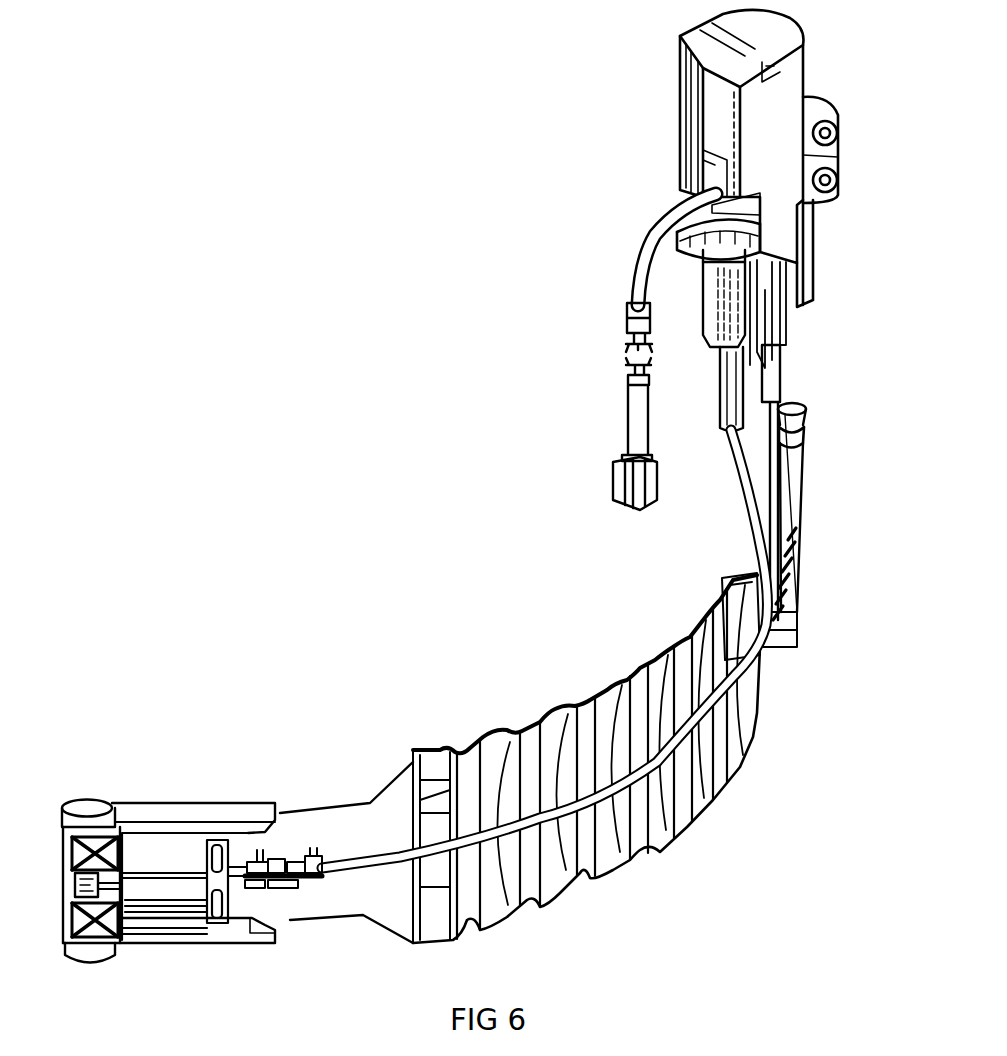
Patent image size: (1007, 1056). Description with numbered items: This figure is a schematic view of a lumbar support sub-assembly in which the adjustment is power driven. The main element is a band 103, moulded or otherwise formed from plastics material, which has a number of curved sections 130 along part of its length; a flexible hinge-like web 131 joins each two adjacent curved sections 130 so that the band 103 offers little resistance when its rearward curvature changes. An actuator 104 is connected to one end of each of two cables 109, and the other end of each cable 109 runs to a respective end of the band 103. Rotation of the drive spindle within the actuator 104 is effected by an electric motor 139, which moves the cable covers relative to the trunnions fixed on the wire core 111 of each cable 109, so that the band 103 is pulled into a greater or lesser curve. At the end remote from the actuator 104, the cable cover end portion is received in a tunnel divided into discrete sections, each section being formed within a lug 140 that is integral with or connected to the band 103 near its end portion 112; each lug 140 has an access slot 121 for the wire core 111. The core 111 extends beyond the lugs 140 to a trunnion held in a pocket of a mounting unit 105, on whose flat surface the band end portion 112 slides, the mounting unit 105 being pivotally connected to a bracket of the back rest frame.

The band 103 is at (550, 694).
The actuator 104 is at (700, 300).
The mounting unit 105 is at (812, 450).
The cable 109 is at (726, 477).
The core 111 is at (157, 862).
The end portion of the band 112 is at (320, 905).
The access slot 121 is at (284, 890).
The curved section 130 is at (503, 917).
The flexible hinge-like web 131 is at (687, 826).
The electric motor 139 is at (685, 115).
The lug 140 is at (286, 862).